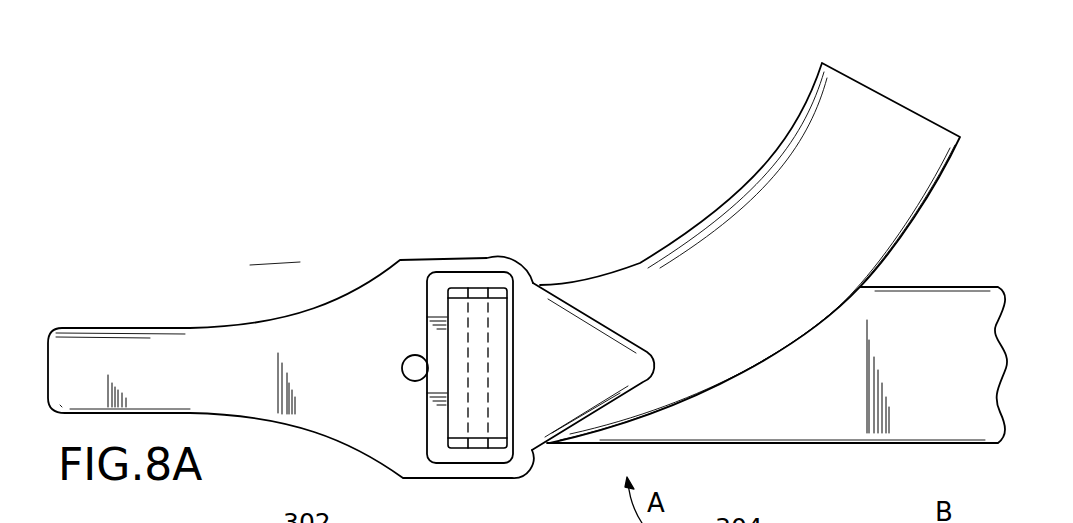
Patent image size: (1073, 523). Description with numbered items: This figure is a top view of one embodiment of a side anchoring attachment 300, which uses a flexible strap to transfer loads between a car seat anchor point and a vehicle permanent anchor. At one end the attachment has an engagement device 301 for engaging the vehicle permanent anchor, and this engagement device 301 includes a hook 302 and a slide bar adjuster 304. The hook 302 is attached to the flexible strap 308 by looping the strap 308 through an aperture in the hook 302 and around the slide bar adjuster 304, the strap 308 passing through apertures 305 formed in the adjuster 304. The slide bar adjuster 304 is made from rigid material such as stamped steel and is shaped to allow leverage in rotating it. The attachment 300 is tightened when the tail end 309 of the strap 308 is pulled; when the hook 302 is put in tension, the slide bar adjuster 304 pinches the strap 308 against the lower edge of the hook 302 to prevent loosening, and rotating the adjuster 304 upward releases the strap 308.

The side anchoring attachment 300 is at (643, 102).
The engagement device 301 is at (525, 234).
The hook 302 is at (181, 327).
The slide bar adjuster 304 is at (646, 351).
The apertures 305 is at (458, 288).
The flexible strap 308 is at (930, 286).
The tail end 309 is at (872, 88).